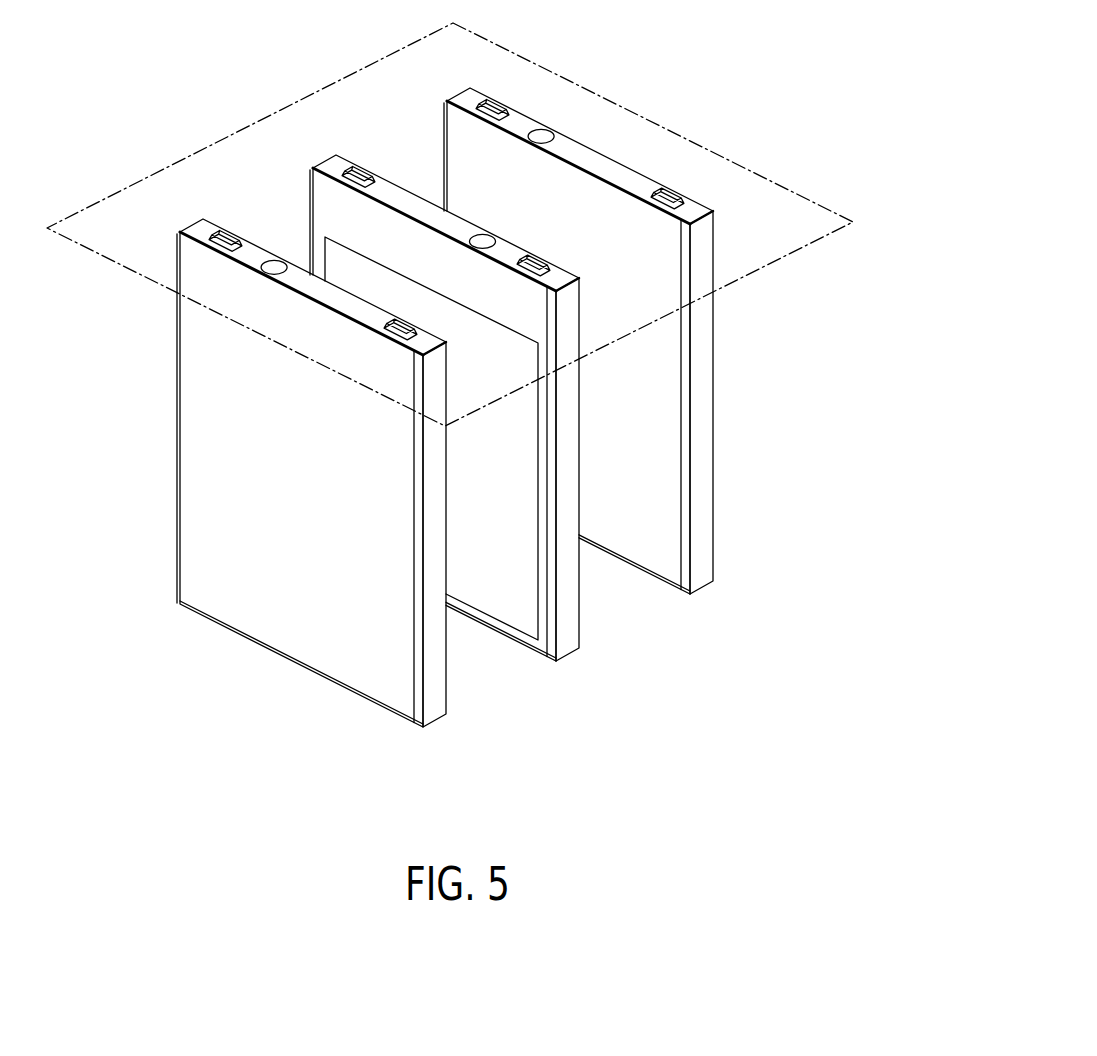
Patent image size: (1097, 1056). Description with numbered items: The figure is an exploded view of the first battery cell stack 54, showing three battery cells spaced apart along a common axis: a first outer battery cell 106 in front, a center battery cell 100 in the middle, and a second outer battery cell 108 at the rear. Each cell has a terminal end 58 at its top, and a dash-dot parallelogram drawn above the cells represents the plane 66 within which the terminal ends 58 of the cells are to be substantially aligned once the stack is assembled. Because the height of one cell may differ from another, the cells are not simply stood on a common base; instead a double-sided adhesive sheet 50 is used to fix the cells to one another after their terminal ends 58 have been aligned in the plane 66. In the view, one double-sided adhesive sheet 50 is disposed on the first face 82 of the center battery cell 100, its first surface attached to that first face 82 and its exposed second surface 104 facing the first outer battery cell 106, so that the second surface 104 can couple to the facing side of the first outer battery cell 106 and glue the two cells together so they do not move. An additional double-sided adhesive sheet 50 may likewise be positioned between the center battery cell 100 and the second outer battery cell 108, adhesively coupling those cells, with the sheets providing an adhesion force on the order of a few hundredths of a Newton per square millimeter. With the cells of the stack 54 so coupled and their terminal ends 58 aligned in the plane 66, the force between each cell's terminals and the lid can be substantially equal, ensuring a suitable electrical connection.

The first battery cell stack 54 is at (694, 107).
The terminal ends 58 is at (302, 288).
The plane 66 is at (760, 268).
The double-sided adhesive sheet 50 is at (497, 523).
The first face 82 is at (466, 283).
The second surface 104 is at (511, 370).
The center battery cell 100 is at (568, 606).
The first outer battery cell 106 is at (437, 703).
The second outer battery cell 108 is at (702, 413).